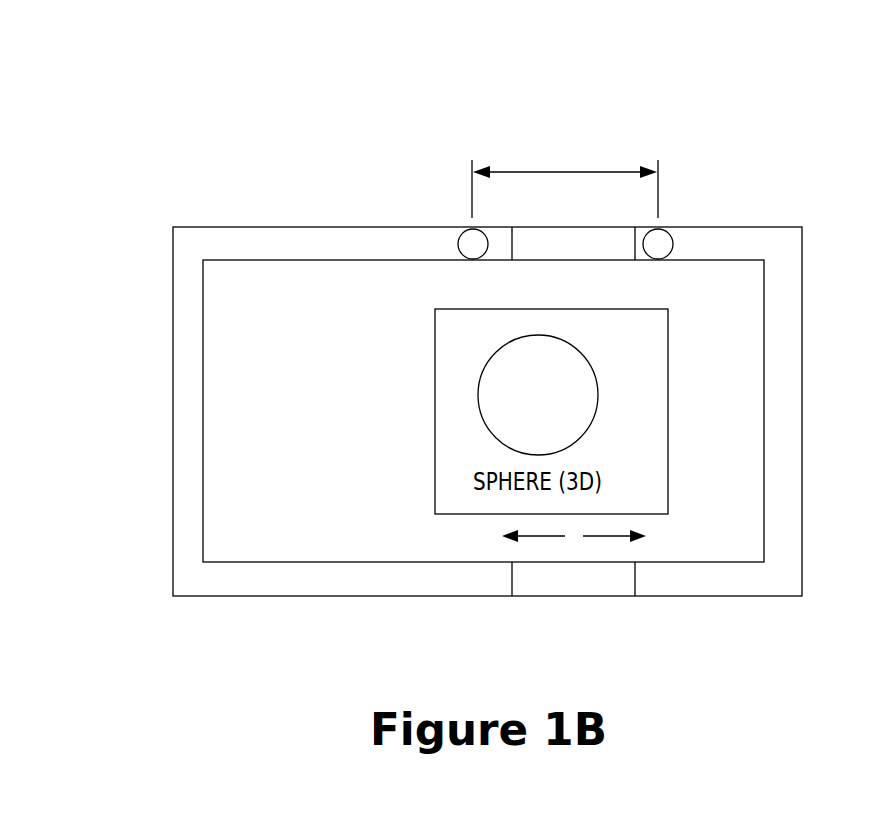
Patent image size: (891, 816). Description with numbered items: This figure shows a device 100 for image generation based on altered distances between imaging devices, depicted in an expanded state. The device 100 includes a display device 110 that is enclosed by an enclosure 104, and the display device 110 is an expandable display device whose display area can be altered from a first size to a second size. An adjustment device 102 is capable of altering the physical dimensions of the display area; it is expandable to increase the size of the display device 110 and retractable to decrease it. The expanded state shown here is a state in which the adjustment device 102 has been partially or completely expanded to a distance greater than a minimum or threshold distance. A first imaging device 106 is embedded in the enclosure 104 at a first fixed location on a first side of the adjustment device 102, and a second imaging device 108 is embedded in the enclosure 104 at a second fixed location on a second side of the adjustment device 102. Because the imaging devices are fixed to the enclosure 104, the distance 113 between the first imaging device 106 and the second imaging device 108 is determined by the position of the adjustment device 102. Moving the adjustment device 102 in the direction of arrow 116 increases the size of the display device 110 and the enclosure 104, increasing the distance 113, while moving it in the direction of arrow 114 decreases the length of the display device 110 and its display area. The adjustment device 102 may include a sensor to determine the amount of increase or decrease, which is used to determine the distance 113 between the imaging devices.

The device 100 is at (722, 86).
The adjustment device 102 is at (604, 262).
The enclosure 104 is at (252, 227).
The first imaging device 106 is at (672, 236).
The second imaging device 108 is at (460, 233).
The display device 110 is at (733, 488).
The distance 113 is at (572, 172).
The arrow 114 is at (528, 538).
The arrow 116 is at (606, 538).